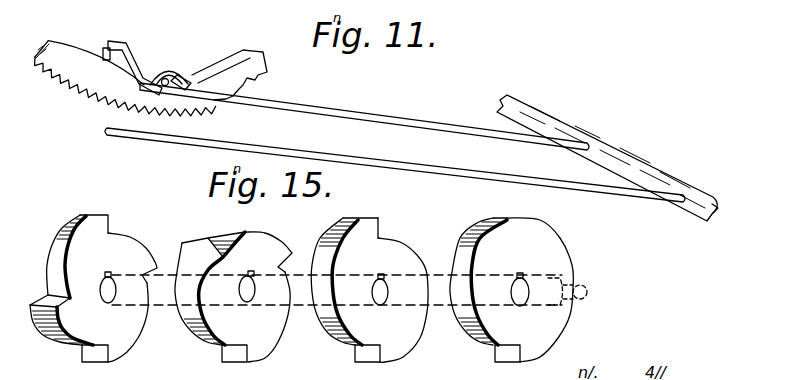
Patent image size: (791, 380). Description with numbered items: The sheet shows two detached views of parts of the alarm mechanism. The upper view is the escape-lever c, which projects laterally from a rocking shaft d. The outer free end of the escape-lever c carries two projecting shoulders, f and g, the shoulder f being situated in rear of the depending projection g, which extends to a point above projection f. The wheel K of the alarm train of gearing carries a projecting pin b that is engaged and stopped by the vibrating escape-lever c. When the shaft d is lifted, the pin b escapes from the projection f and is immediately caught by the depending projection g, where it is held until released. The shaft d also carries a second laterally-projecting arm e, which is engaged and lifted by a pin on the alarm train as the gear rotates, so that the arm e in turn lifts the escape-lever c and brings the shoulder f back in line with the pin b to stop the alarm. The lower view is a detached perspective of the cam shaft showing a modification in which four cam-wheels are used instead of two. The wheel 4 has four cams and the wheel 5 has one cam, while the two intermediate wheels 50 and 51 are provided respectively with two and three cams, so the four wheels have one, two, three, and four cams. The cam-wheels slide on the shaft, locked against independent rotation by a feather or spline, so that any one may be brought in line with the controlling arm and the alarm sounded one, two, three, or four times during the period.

In FIG. 11, the depending projection g is at (104, 50).
In FIG. 11, the projecting shoulder f is at (167, 78).
In FIG. 11, the projecting pin b is at (186, 76).
In FIG. 11, the wheel K is at (254, 58).
In FIG. 11, the escape-lever c is at (340, 112).
In FIG. 11, the laterally-projecting arm e is at (395, 160).
In FIG. 11, the rocking shaft d is at (668, 180).
In FIG. 15, the cam-wheel 4 is at (130, 250).
In FIG. 15, the intermediate cam-wheel 51 is at (218, 328).
In FIG. 15, the intermediate cam-wheel 50 is at (403, 253).
In FIG. 15, the cam-wheel 5 is at (572, 275).